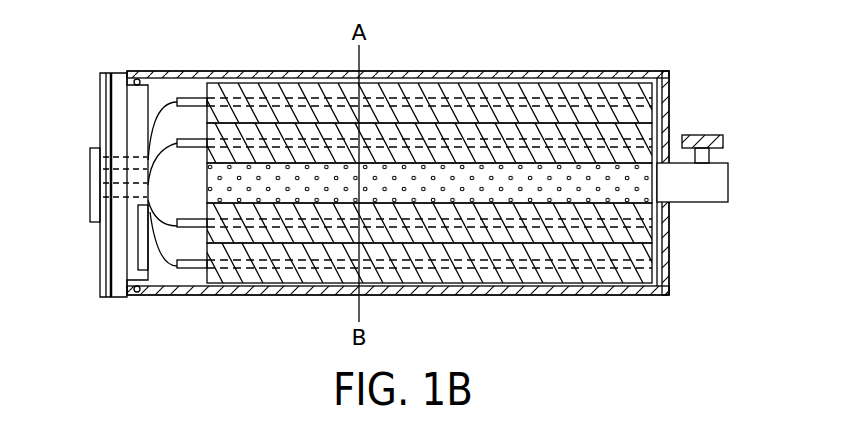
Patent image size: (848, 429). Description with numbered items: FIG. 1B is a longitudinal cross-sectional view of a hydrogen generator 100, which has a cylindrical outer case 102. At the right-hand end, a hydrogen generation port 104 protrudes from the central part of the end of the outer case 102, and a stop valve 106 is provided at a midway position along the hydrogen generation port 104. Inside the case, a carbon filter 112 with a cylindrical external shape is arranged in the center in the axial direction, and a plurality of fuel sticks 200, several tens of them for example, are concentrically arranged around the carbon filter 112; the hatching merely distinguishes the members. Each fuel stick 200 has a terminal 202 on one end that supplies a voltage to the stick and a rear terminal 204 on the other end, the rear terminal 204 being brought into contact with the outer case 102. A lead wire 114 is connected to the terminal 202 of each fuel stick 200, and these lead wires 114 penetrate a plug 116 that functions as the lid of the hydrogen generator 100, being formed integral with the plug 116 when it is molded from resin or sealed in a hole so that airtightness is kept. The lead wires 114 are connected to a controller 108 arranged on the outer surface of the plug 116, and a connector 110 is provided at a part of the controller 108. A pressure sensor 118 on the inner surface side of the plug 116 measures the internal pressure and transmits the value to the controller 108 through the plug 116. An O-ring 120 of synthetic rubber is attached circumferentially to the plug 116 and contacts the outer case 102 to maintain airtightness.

The hydrogen generator 100 is at (495, 72).
The outer case 102 is at (605, 296).
The hydrogen generation port 104 is at (730, 183).
The stop valve 106 is at (703, 135).
The controller 108 is at (102, 115).
The connector 110 is at (95, 170).
The carbon filter 112 is at (562, 173).
The lead wire 114 is at (162, 268).
The plug 116 is at (122, 100).
The pressure sensor 118 is at (143, 250).
The O-ring 120 is at (138, 81).
The fuel stick 200 is at (303, 130).
The terminal 202 is at (228, 296).
The rear terminal 204 is at (657, 92).